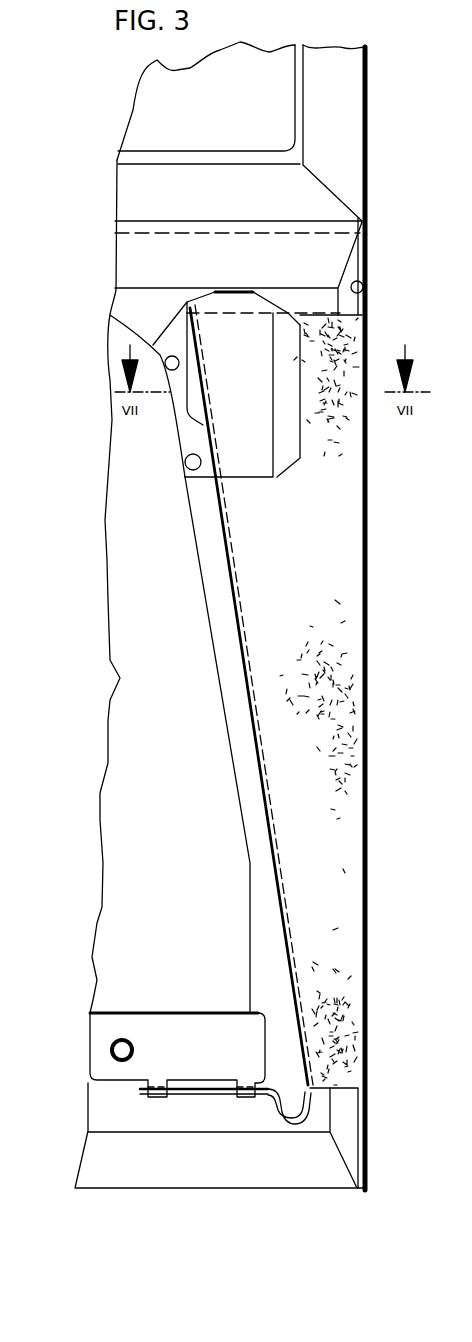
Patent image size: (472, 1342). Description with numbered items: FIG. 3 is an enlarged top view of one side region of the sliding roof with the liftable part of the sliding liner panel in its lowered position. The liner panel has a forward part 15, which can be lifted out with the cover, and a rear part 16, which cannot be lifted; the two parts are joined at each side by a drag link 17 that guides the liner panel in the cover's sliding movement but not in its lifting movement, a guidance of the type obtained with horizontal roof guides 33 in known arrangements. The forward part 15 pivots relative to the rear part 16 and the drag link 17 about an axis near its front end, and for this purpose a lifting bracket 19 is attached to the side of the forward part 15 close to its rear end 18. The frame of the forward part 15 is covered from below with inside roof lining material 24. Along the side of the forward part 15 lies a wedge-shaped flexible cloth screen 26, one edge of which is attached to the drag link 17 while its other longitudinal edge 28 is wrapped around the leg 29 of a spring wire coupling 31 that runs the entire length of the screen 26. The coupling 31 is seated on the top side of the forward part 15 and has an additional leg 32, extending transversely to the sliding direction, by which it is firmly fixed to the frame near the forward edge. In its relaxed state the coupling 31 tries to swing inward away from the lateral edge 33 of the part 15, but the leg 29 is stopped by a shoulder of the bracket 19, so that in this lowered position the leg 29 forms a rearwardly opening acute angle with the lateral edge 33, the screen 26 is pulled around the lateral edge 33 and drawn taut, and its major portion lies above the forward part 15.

The forward part of the sliding liner panel 15 is at (136, 681).
The rear part of the sliding liner panel 16 is at (163, 108).
The drag link 17 is at (366, 665).
The rear end of the liftable part 18 is at (148, 257).
The lifting bracket 19 is at (255, 447).
The inside roof lining material 24 is at (113, 1160).
The wedge-shaped flexible screen 26 is at (320, 588).
The longitudinal edge of the screen 28 is at (227, 558).
The leg of the spring wire coupling 29 is at (238, 593).
The spring wire coupling 31 is at (302, 1120).
The additional leg of the spring wire coupling 32 is at (197, 1090).
The lateral edge of the part 33 is at (364, 285).